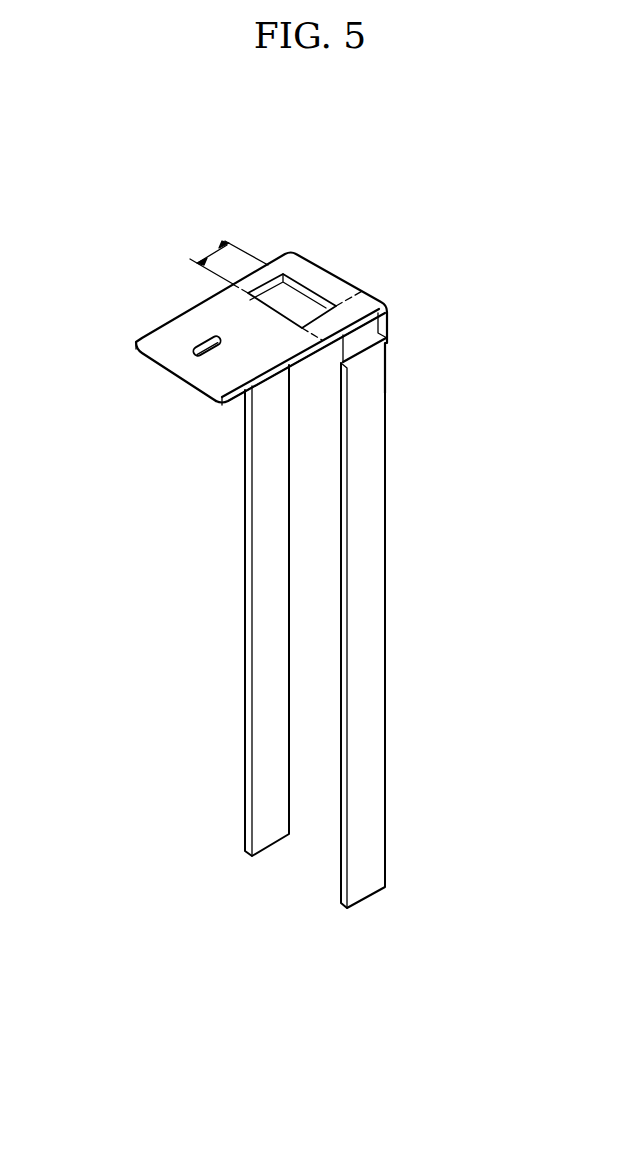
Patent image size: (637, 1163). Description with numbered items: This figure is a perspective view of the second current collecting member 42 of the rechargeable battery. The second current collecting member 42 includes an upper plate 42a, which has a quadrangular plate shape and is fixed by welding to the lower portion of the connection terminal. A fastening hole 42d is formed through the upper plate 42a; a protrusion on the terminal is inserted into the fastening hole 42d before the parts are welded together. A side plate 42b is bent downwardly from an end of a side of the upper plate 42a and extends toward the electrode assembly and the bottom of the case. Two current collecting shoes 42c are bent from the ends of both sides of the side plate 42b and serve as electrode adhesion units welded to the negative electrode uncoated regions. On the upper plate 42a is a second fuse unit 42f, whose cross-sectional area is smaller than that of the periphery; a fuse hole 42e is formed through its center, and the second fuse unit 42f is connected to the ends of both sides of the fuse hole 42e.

The second current collecting member 42 is at (360, 268).
The upper plate 42a is at (181, 331).
The side plate 42b is at (365, 330).
The current collecting shoes 42c is at (365, 637).
The fastening hole 42d is at (200, 349).
The fuse hole 42e is at (303, 290).
The second fuse unit 42f is at (325, 323).